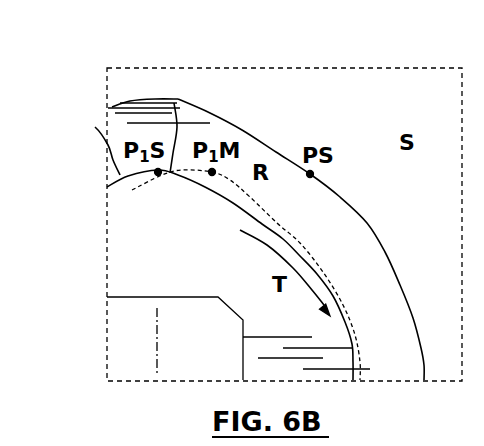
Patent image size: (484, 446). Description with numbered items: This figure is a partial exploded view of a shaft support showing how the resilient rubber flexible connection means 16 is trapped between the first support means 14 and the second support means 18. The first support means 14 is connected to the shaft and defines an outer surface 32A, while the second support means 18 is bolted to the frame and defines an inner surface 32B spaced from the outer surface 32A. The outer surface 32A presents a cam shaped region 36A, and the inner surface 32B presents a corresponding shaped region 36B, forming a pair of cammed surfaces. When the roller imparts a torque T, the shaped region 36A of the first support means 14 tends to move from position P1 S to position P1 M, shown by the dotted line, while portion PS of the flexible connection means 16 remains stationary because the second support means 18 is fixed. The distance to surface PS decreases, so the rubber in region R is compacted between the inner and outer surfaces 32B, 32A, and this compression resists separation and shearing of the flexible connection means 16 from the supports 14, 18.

The first support means 14 is at (123, 248).
The flexible connection means 16 is at (115, 112).
The second support means 18 is at (322, 100).
The outer surface 32A is at (95, 127).
The inner surface 32B is at (147, 98).
The shaped region 36A is at (174, 103).
The corresponding shaped region 36B is at (178, 99).